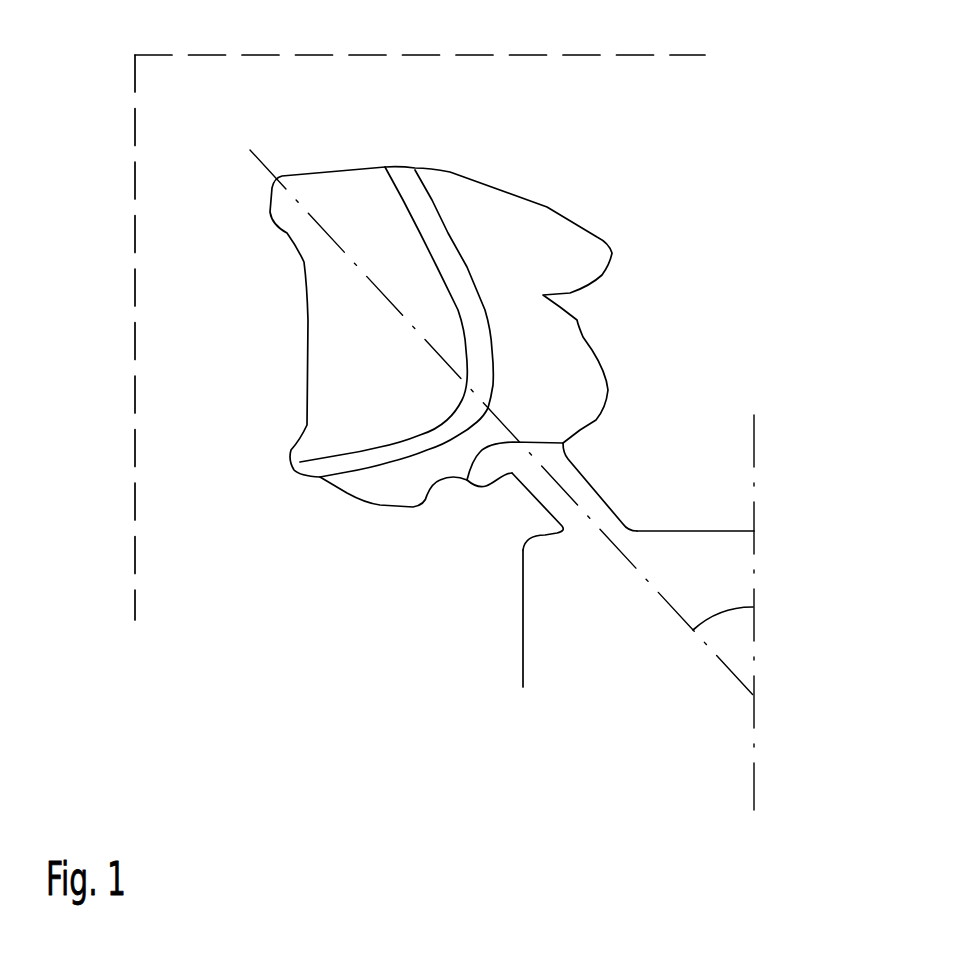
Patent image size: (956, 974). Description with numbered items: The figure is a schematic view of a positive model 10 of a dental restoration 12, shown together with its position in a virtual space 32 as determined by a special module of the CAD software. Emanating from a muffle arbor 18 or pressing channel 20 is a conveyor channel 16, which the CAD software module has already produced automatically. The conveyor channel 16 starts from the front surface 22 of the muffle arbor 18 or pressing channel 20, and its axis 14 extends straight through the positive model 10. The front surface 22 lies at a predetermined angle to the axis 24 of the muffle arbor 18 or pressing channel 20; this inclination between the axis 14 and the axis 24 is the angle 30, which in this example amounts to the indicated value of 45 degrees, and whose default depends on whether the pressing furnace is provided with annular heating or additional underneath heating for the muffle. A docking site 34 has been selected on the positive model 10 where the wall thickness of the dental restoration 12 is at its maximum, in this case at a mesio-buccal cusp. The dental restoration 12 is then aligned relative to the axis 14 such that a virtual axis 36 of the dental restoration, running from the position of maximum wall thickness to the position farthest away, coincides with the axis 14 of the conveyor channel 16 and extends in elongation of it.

The positive model 10 is at (585, 155).
The dental restoration 12 is at (408, 110).
The axis of conveyor channel 14 is at (568, 493).
The conveyor channel 16 is at (543, 490).
The muffle arbor 18 is at (567, 657).
The pressing channel 20 is at (710, 740).
The front surface 22 is at (692, 512).
The axis of muffle arbor 24 is at (757, 450).
The angle 30 is at (752, 618).
The virtual space 32 is at (135, 290).
The docking site 34 is at (470, 504).
The virtual axis of dental restoration 36 is at (262, 158).
The angle of 45 degrees 45 is at (753, 607).